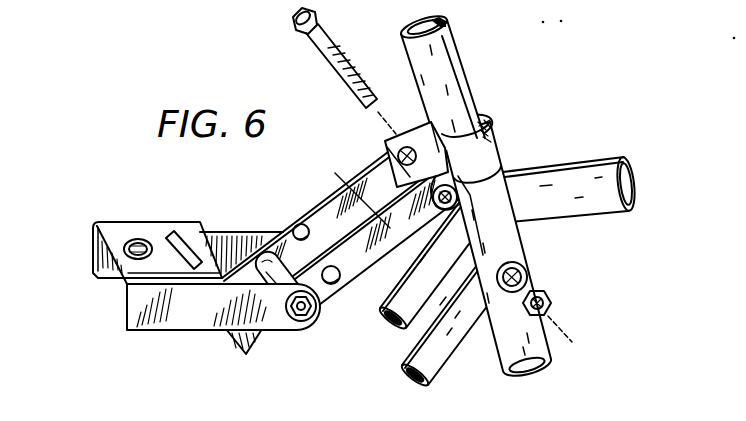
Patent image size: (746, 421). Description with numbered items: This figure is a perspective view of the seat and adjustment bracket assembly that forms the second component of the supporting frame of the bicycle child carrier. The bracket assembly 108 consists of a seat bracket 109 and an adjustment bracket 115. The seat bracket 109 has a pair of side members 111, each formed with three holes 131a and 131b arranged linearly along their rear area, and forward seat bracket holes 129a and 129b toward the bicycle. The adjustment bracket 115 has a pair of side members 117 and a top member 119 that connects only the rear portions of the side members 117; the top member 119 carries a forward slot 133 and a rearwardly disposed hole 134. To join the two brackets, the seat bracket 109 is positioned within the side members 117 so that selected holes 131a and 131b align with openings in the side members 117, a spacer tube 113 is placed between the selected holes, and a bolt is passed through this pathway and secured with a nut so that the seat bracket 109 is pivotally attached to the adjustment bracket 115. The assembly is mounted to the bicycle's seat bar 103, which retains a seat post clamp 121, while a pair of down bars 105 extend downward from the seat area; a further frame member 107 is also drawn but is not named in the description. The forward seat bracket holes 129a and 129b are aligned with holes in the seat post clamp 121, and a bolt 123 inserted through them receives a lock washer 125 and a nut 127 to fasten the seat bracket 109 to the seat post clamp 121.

The seat bar 103 is at (445, 45).
The down bars 105 is at (428, 339).
The tube 107 is at (583, 174).
The bracket assembly 108 is at (204, 169).
The seat bracket 109 is at (314, 270).
The side members 111 is at (338, 176).
The spacer tube 113 is at (230, 323).
The adjustment bracket 115 is at (188, 285).
The side members 117 is at (213, 242).
The top member 119 is at (96, 238).
The seat post clamp 121 is at (477, 194).
The bolt 123 is at (346, 54).
The lock washer 125 is at (528, 270).
The nut 127 is at (553, 303).
The forward seat bracket hole 129a is at (480, 158).
The forward seat bracket hole 129b is at (393, 144).
The holes 131a is at (338, 284).
The holes 131b is at (295, 225).
The forward slot 133 is at (175, 237).
The rearwardly disposed hole 134 is at (130, 244).